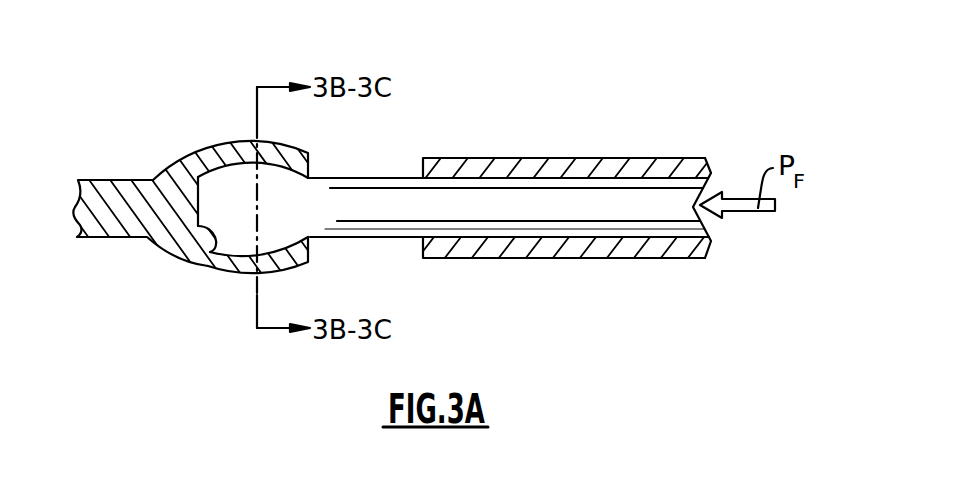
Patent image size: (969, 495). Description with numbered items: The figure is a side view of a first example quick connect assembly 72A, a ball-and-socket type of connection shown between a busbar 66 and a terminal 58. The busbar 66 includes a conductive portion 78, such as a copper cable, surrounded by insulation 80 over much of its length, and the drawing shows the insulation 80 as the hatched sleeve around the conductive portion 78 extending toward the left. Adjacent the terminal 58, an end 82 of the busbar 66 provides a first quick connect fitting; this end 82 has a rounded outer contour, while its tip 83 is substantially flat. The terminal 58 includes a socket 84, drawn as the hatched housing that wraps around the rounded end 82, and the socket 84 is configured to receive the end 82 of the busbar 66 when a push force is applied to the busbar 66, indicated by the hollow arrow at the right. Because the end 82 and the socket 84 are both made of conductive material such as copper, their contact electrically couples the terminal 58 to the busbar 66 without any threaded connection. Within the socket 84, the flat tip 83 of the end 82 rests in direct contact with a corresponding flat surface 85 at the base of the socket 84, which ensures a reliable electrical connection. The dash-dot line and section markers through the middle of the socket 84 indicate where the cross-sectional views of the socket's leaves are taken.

The socket 84 is at (200, 130).
The end 82 is at (283, 207).
The tip 83 is at (198, 198).
The flat surface 85 is at (207, 265).
The terminal 58 is at (183, 294).
The insulation 80 is at (557, 158).
The conductive portion 78 is at (590, 210).
The busbar 66 is at (716, 130).
The quick connect assembly 72A is at (530, 85).